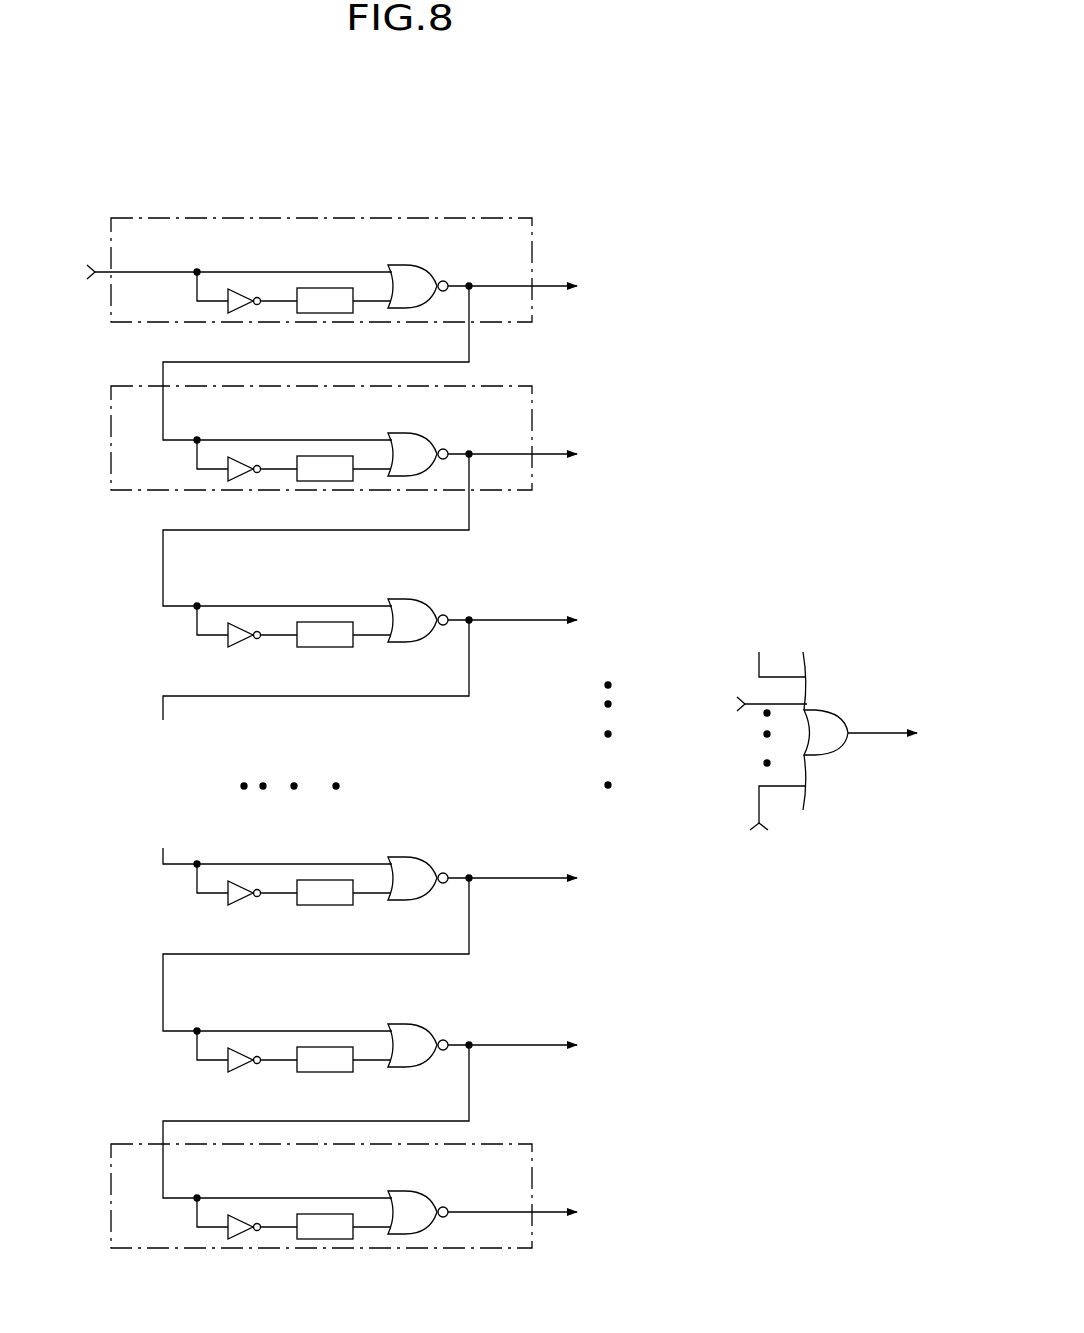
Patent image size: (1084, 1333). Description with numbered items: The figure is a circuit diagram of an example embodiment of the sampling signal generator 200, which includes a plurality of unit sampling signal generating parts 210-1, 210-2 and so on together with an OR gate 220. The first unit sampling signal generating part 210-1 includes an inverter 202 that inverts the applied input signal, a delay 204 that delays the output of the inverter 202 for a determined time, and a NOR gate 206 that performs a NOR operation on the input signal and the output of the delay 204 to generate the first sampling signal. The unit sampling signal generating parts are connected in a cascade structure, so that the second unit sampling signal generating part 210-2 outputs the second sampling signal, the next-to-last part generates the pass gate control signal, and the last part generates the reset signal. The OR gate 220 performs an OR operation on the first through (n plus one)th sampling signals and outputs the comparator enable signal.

The sampling signal generator 200 is at (166, 180).
The inverter 202 is at (246, 310).
The delay 204 is at (327, 313).
The NOR gate 206 is at (420, 265).
The first unit sampling signal generating part 210-1 is at (512, 214).
The second unit sampling signal generating part 210-2 is at (522, 377).
The OR gate 220 is at (838, 713).